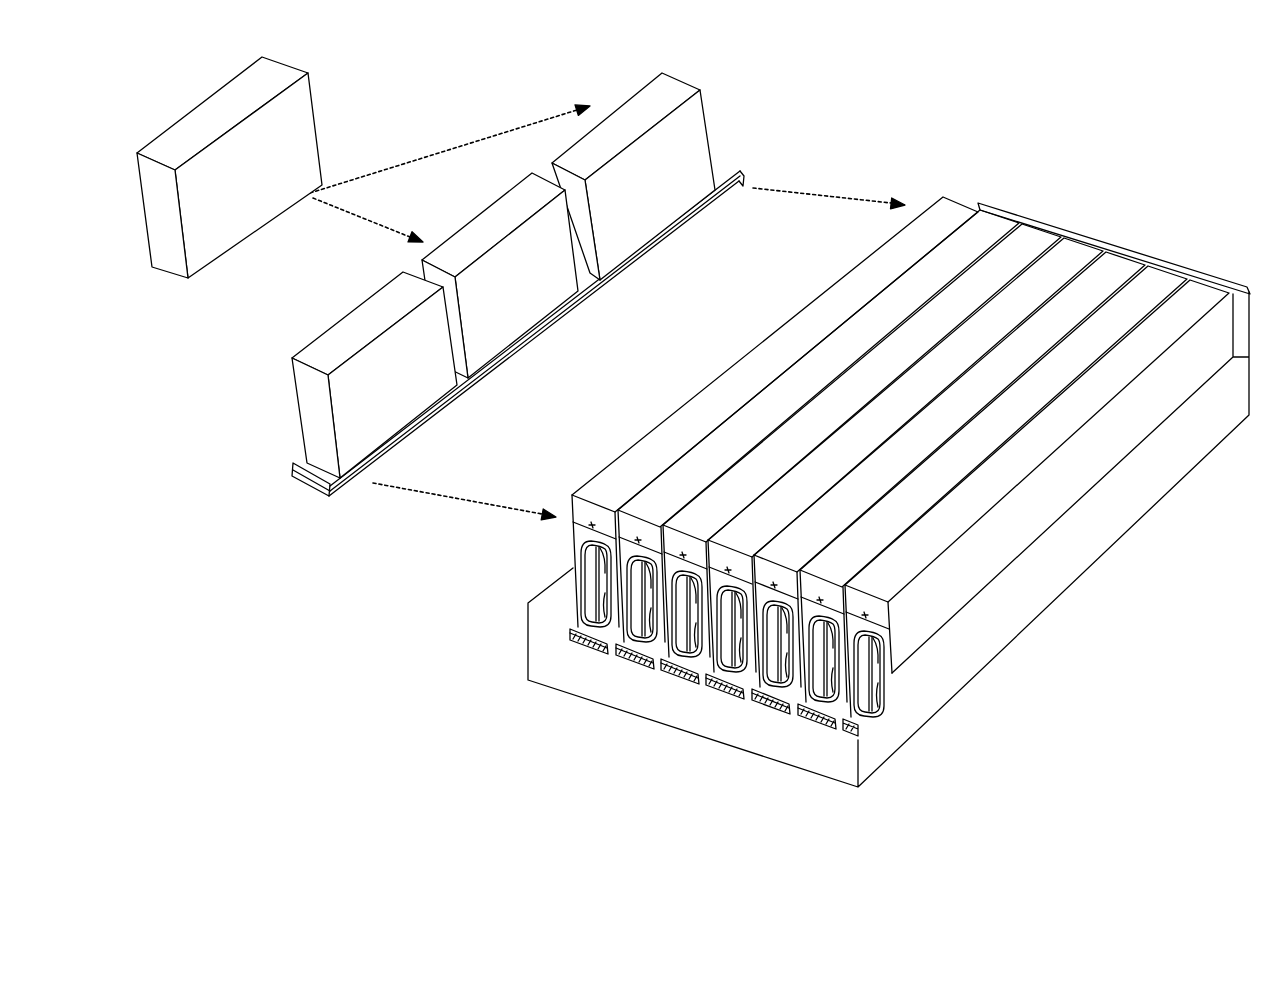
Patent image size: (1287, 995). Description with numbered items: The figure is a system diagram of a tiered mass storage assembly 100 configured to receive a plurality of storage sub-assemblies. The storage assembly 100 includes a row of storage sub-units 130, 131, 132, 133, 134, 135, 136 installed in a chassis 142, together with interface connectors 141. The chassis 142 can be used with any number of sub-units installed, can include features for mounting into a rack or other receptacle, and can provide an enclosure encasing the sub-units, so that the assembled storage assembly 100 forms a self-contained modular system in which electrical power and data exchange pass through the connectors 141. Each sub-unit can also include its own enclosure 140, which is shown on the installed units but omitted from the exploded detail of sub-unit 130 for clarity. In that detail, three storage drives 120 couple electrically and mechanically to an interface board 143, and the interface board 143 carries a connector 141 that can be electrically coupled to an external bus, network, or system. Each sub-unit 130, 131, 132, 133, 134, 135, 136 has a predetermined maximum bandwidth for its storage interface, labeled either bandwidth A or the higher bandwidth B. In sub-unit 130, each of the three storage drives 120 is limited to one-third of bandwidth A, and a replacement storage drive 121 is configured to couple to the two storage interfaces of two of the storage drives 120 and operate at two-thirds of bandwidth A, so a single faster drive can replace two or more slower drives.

The storage assembly 100 is at (1125, 72).
The storage drives 120 is at (627, 123).
The replacement storage drive 121 is at (200, 247).
The storage sub-unit 130 is at (718, 70).
The storage sub-unit 131 is at (818, 426).
The storage sub-unit 132 is at (862, 440).
The storage sub-unit 133 is at (905, 455).
The storage sub-unit 134 is at (949, 469).
The storage sub-unit 135 is at (993, 484).
The storage sub-unit 136 is at (1037, 498).
The enclosure 140 is at (1210, 278).
The connector 141 is at (290, 480).
The chassis 142 is at (1108, 530).
The interface board 143 is at (729, 163).